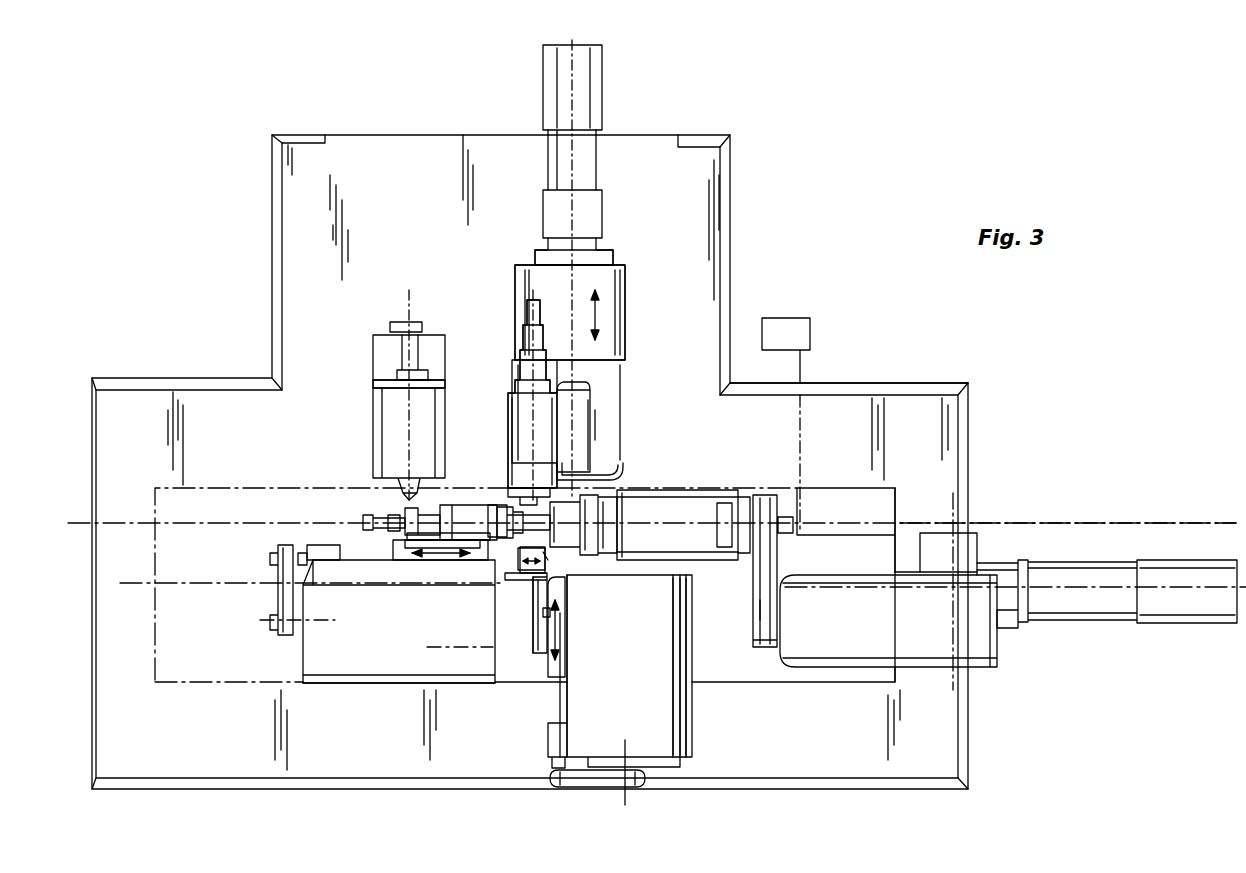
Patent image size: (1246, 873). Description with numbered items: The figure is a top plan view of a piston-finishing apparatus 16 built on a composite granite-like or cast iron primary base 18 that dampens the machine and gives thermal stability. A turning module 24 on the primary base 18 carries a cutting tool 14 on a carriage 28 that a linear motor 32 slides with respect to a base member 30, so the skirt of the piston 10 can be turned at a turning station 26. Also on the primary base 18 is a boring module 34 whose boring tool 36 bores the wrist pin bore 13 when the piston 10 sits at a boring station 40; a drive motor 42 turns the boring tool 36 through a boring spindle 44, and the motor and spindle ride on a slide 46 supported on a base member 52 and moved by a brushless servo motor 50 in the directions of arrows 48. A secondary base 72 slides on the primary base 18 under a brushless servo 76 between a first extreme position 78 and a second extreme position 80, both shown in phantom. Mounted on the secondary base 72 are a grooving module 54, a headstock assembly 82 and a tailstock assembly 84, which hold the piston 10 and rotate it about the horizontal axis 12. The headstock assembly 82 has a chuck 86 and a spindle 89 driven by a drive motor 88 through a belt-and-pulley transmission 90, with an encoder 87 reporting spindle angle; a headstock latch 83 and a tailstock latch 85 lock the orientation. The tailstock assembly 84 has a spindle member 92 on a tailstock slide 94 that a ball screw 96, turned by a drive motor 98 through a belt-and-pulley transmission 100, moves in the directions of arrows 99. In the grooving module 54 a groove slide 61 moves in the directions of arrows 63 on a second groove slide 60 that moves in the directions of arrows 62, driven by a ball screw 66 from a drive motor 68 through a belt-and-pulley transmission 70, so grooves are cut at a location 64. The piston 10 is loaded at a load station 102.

The piston 10 is at (513, 510).
The horizontal axis 12 is at (1030, 525).
The wrist pin bore 13 is at (520, 548).
The cutting tool 14 is at (417, 502).
The apparatus 16 is at (808, 234).
The primary base 18 is at (838, 386).
The turning module 24 is at (406, 320).
The turning station 26 is at (397, 507).
The carriage 28 is at (398, 452).
The base member 30 is at (373, 383).
The linear motor 32 is at (428, 375).
The boring module 34 is at (625, 227).
The boring tool 36 is at (550, 500).
The boring station 40 is at (533, 483).
The drive motor 42 is at (538, 417).
The boring spindle 44 is at (568, 490).
The slide 46 is at (583, 402).
The arrows 48 is at (600, 320).
The brushless servo motor 50 is at (527, 266).
The base member 52 is at (605, 370).
The grooving module 54 is at (691, 744).
The second groove slide 60 is at (547, 645).
The groove slide 61 is at (543, 552).
The arrows 62 is at (565, 630).
The arrows 63 is at (542, 560).
The location 64 is at (548, 560).
The ball screw 66 is at (567, 697).
The drive motor 68 is at (670, 727).
The belt-and-pulley transmission 70 is at (612, 788).
The secondary base 72 is at (838, 488).
The brushless servo 76 is at (1060, 620).
The first extreme position 78 is at (155, 497).
The second extreme position 80 is at (952, 493).
The headstock assembly 82 is at (912, 671).
The headstock latch 83 is at (728, 510).
The tailstock assembly 84 is at (347, 684).
The tailstock latch 85 is at (410, 528).
The chuck 86 is at (570, 515).
The encoder 87 is at (800, 318).
The drive motor 88 is at (852, 577).
The spindle 89 is at (720, 495).
The belt-and-pulley transmission 90 is at (775, 565).
The spindle member 92 is at (458, 550).
The tailstock slide 94 is at (405, 555).
The ball screw 96 is at (350, 547).
The drive motor 98 is at (392, 645).
The arrows 99 is at (437, 553).
The belt-and-pulley transmission 100 is at (282, 583).
The load station 102 is at (473, 513).